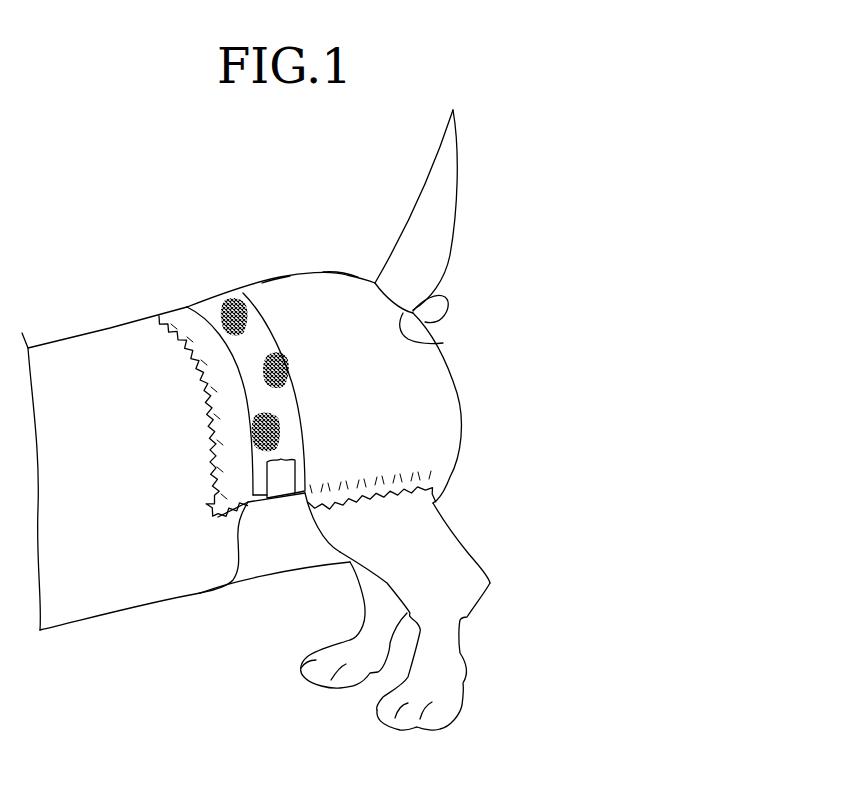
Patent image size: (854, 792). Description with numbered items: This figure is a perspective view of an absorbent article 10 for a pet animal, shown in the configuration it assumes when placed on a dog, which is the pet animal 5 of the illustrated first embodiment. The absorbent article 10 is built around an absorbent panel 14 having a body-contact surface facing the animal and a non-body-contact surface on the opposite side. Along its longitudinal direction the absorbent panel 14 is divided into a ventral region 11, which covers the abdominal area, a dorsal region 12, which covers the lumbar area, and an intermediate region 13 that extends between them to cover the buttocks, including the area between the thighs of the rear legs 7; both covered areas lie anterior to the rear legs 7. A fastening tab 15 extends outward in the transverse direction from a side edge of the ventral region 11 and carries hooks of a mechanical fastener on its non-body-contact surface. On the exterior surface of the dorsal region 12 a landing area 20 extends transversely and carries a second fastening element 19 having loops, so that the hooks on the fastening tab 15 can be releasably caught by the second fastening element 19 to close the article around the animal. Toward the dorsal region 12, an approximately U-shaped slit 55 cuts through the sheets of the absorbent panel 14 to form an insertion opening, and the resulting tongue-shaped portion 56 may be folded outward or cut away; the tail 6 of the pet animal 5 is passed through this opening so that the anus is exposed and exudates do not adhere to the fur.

The pet animal 5 is at (107, 357).
The tail 6 is at (445, 172).
The rear legs 7 is at (367, 628).
The absorbent article 10 is at (421, 393).
The ventral region 11 is at (273, 560).
The dorsal region 12 is at (182, 321).
The intermediate region 13 is at (350, 288).
The absorbent panel 14 is at (282, 291).
The fastening tab 15 is at (277, 477).
The second fastening element 19 is at (222, 309).
The landing area 20 is at (293, 362).
The slit 55 is at (432, 340).
The tongue-shaped portion 56 is at (435, 303).